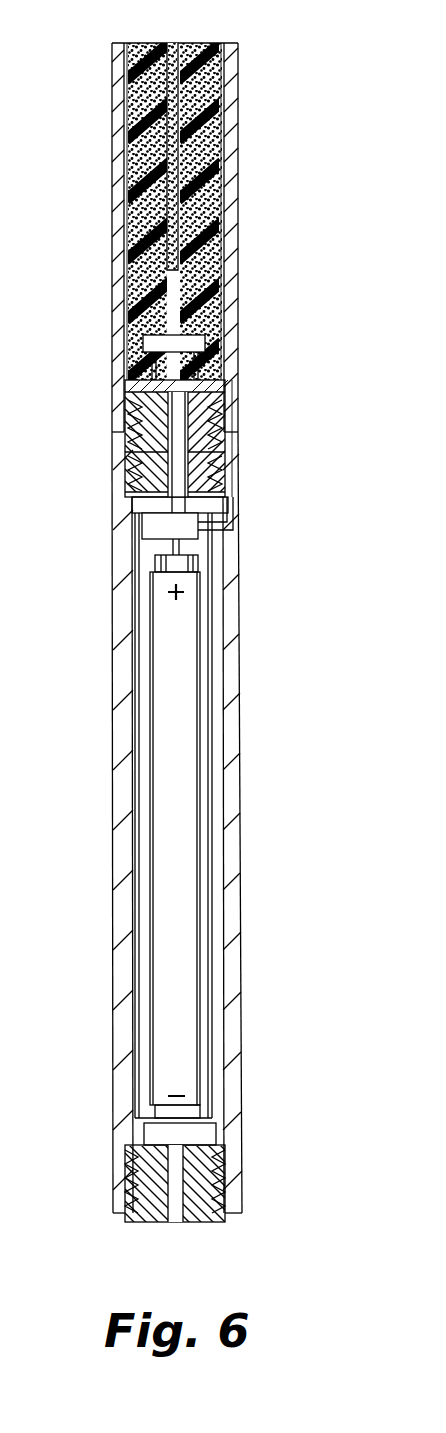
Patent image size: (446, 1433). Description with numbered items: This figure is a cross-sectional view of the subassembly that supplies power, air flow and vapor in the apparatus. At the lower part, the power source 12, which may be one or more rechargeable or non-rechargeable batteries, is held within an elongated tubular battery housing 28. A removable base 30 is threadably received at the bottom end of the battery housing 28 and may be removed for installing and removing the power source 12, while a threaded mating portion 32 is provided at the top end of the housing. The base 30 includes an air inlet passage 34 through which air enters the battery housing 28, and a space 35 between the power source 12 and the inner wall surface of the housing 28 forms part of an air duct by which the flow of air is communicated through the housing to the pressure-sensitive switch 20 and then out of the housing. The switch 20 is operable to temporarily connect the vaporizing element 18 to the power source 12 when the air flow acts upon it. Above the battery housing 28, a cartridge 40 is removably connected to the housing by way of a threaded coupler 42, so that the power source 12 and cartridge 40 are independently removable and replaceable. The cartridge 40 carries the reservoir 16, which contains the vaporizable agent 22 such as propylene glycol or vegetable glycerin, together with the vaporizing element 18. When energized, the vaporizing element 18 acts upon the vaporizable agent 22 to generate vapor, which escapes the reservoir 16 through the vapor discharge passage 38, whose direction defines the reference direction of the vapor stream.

The power source 12 is at (175, 850).
The reservoir 16 is at (154, 606).
The vaporizing element 18 is at (157, 343).
The switch 20 is at (153, 525).
The vaporizable agent 22 is at (138, 142).
The battery housing 28 is at (112, 1002).
The base 30 is at (150, 1222).
The mating portion 32 is at (127, 472).
The air inlet passage 34 is at (178, 1222).
The space 35 is at (140, 748).
The vapor discharge passage 38 is at (172, 44).
The cartridge 40 is at (117, 233).
The threaded coupler 42 is at (239, 452).